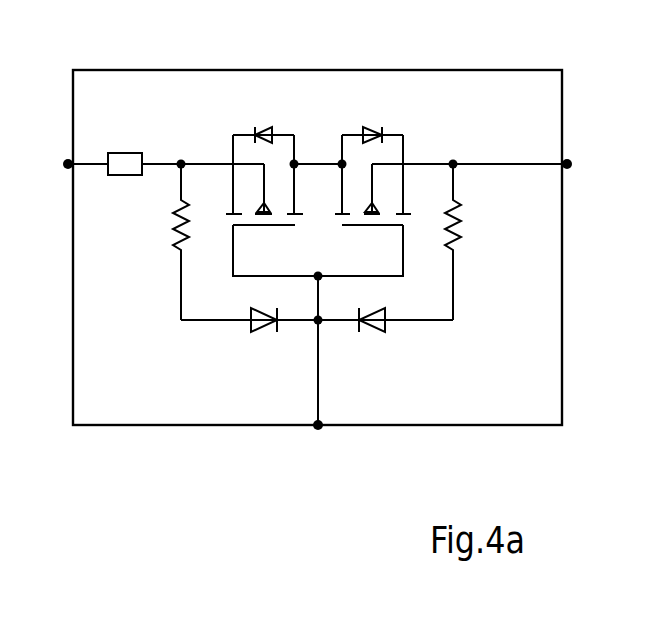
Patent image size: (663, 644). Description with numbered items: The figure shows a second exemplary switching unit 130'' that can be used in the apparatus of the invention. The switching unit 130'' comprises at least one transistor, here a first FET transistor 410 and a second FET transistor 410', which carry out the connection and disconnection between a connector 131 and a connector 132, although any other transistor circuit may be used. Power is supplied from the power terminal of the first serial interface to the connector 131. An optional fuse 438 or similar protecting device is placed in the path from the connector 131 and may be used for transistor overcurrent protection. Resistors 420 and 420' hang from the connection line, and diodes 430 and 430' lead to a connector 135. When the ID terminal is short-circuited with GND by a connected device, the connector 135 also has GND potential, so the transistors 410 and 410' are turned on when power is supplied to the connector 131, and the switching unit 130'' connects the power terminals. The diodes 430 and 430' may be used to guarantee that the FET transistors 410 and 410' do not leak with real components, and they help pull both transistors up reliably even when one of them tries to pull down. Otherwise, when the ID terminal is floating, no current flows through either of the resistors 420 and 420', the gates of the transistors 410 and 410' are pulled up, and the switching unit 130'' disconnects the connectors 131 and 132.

The switching unit 130'' is at (317, 220).
The connector 131 is at (65, 168).
The connector 132 is at (572, 170).
The connector 135 is at (313, 431).
The fuse 438 is at (125, 152).
The first FET transistor 410 is at (235, 166).
The second FET transistor 410' is at (406, 164).
The resistor 420 is at (142, 242).
The resistor 420' is at (496, 242).
The diode 430 is at (255, 349).
The diode 430' is at (384, 349).